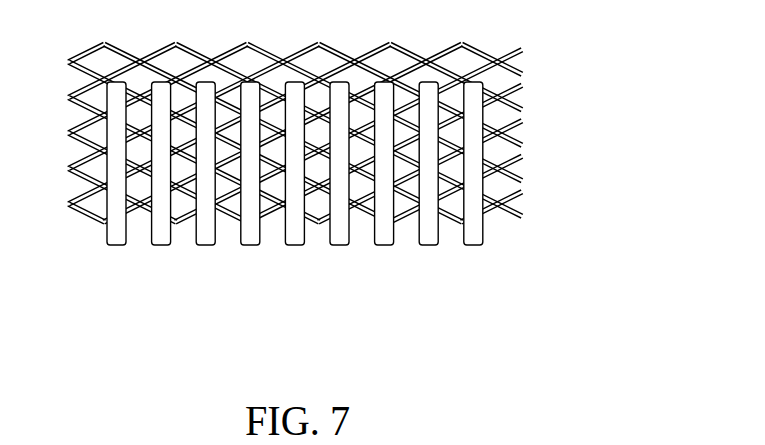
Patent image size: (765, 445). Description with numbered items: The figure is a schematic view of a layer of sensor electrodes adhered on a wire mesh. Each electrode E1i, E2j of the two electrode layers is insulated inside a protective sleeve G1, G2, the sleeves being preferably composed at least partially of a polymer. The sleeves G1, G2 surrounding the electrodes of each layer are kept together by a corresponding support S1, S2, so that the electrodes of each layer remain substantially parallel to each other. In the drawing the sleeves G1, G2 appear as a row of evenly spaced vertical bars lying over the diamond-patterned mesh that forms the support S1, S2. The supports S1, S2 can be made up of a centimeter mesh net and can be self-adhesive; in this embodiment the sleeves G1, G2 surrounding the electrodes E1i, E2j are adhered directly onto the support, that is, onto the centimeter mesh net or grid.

The protective sleeve G1 is at (263, 229).
The protective sleeve G2 is at (263, 229).
The electrode E1i is at (257, 229).
The electrode E2j is at (252, 275).
The support S1 is at (357, 170).
The support S2 is at (537, 210).